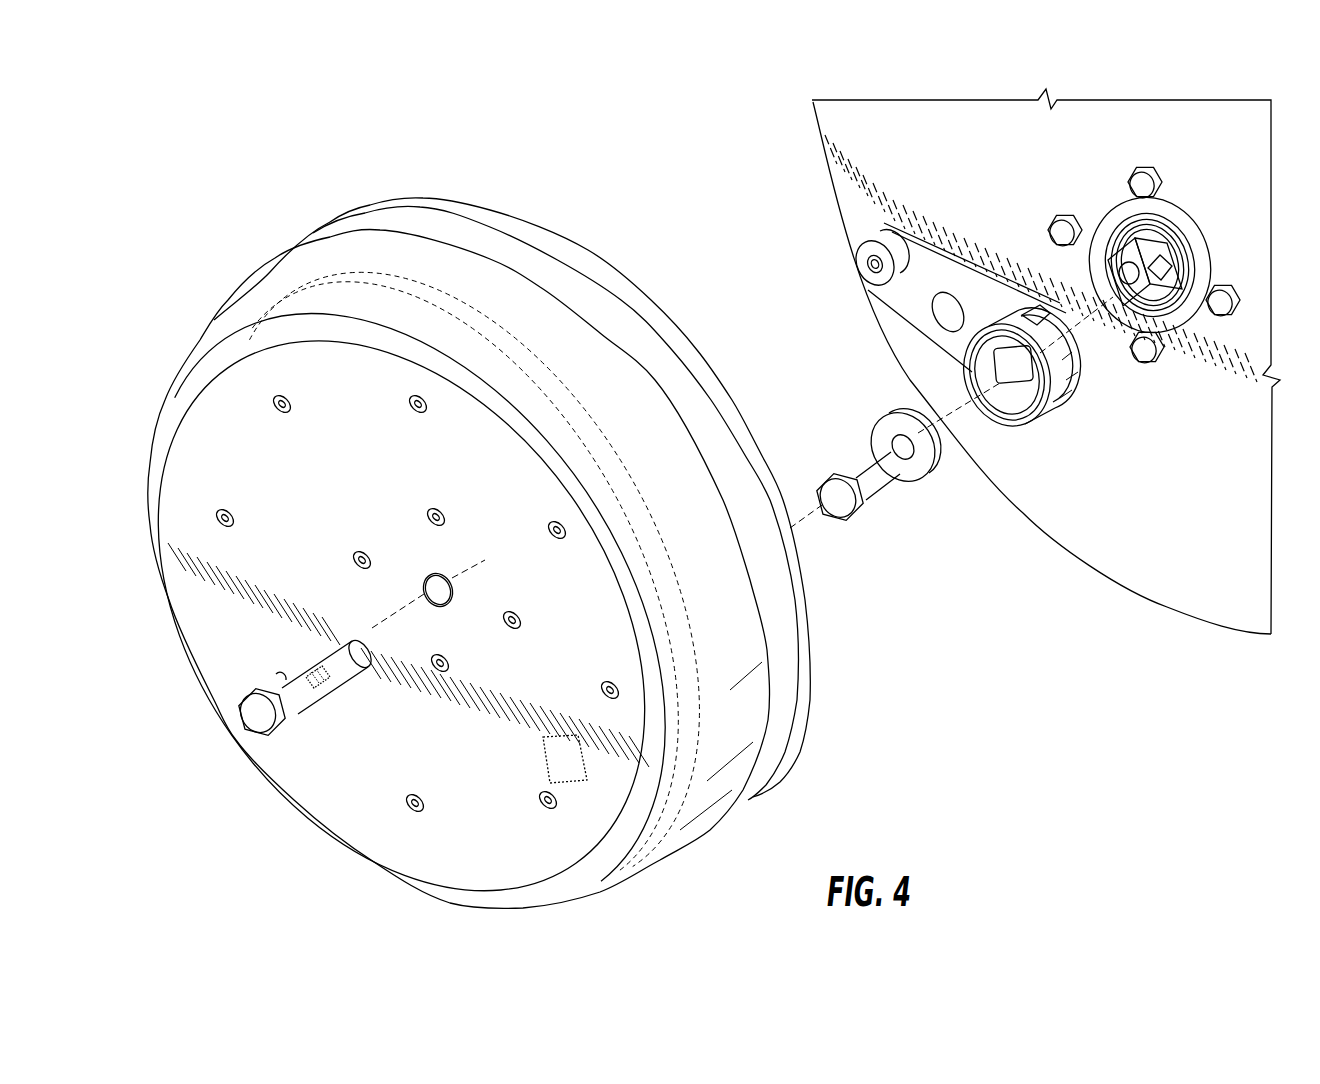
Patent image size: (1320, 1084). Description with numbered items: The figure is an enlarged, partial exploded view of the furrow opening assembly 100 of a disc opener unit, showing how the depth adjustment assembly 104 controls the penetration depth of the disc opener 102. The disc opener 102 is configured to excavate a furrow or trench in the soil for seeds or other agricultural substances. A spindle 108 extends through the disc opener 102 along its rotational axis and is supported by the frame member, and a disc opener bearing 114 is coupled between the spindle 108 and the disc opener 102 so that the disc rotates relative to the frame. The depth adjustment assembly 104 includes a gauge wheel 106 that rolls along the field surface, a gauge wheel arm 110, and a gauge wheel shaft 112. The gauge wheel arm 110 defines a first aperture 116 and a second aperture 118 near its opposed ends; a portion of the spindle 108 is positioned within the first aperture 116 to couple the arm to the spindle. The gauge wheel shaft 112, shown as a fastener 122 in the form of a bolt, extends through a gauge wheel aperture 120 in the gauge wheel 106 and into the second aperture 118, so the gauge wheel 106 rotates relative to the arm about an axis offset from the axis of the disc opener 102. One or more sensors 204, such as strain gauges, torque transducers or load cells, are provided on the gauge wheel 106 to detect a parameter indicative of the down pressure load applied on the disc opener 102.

The furrow opening assembly 100 is at (212, 168).
The disc opener 102 is at (1112, 528).
The depth adjustment assembly 104 is at (957, 683).
The gauge wheel 106 is at (519, 268).
The spindle 108 is at (1137, 253).
The gauge wheel arm 110 is at (940, 240).
The gauge wheel shaft 112 is at (343, 645).
The disc opener bearing 114 is at (1177, 300).
The first aperture 116 is at (1017, 392).
The second aperture 118 is at (863, 268).
The gauge wheel aperture 120 is at (457, 590).
The fastener 122 is at (253, 718).
The sensor 204 is at (1033, 310).